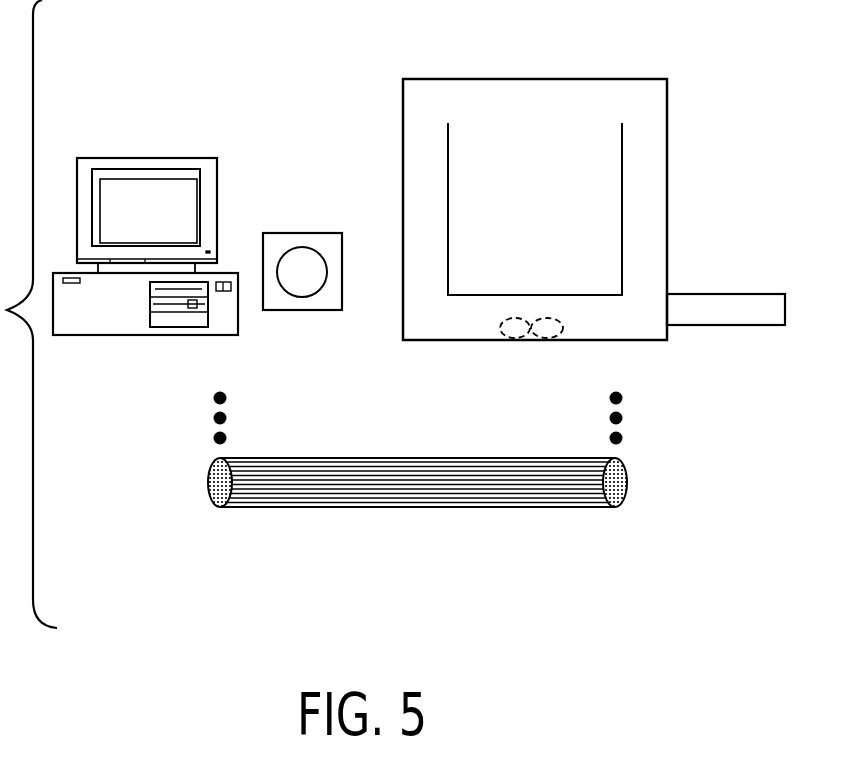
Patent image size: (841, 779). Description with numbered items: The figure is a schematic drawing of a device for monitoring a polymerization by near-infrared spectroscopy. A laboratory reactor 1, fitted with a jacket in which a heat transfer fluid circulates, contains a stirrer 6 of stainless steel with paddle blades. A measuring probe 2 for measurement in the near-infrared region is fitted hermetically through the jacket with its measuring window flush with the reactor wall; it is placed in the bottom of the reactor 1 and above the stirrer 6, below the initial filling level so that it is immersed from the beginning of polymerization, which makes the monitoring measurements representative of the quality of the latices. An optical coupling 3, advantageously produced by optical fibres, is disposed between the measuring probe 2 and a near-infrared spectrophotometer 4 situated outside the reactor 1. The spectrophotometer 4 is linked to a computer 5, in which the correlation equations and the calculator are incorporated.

The reactor 1 is at (537, 340).
The measuring probe 2 is at (730, 325).
The optical coupling 3 is at (455, 507).
The near-infrared spectrophotometer 4 is at (294, 310).
The computer 5 is at (158, 335).
The stirrer 6 is at (503, 339).